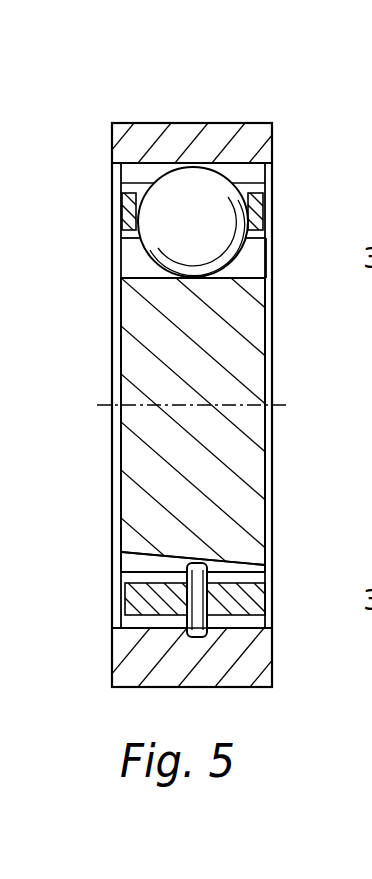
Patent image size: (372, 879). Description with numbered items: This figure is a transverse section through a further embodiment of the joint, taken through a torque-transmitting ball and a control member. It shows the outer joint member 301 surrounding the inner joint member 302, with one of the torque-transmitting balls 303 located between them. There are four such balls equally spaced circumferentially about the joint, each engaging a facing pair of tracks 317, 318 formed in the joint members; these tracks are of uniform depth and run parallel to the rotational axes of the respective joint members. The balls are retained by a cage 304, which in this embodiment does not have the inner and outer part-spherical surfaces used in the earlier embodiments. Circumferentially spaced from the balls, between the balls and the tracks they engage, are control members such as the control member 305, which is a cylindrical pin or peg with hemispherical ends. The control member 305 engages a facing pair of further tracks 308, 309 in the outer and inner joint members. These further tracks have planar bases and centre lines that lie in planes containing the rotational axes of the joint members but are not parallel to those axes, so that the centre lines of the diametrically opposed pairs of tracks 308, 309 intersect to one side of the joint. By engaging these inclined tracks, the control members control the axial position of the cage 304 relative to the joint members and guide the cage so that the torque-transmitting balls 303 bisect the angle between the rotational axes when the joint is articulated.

The outer joint member 301 is at (250, 134).
The inner joint member 302 is at (232, 362).
The torque-transmitting ball 303 is at (205, 195).
The cage 304 is at (143, 598).
The control member 305 is at (192, 632).
The further track 308 is at (213, 568).
The further track 309 is at (210, 632).
The track 317 is at (140, 174).
The track 318 is at (130, 258).